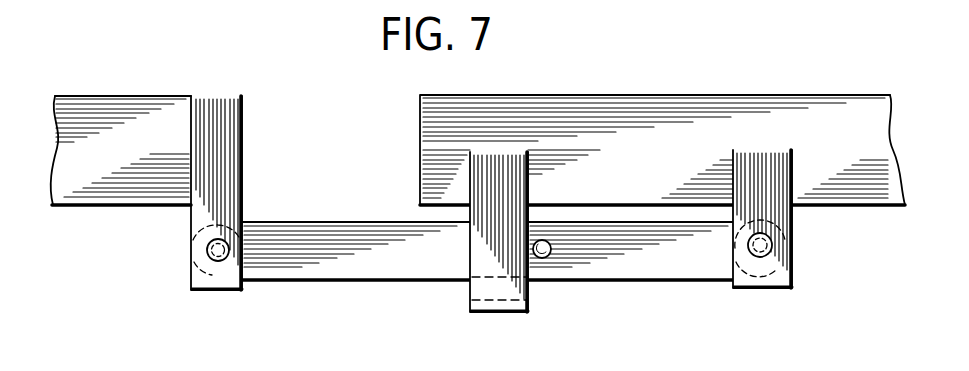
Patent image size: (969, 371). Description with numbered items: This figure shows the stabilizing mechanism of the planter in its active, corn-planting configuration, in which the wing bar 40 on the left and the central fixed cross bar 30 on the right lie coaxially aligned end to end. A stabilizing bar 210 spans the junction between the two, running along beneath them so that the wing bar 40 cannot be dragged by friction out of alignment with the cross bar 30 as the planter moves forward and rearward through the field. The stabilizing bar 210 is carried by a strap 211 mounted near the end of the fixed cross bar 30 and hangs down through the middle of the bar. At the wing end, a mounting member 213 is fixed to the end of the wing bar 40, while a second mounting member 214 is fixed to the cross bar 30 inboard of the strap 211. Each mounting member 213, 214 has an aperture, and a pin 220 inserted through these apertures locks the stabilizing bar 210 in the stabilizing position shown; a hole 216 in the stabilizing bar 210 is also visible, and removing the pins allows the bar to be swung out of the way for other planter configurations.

The wing bar 40 is at (112, 108).
The cross bar 30 is at (682, 97).
The stabilizing bar 210 is at (618, 282).
The strap 211 is at (484, 314).
The mounting member 213 is at (232, 178).
The mounting member 214 is at (772, 172).
The hole 216 is at (546, 243).
The pin 220 is at (765, 262).